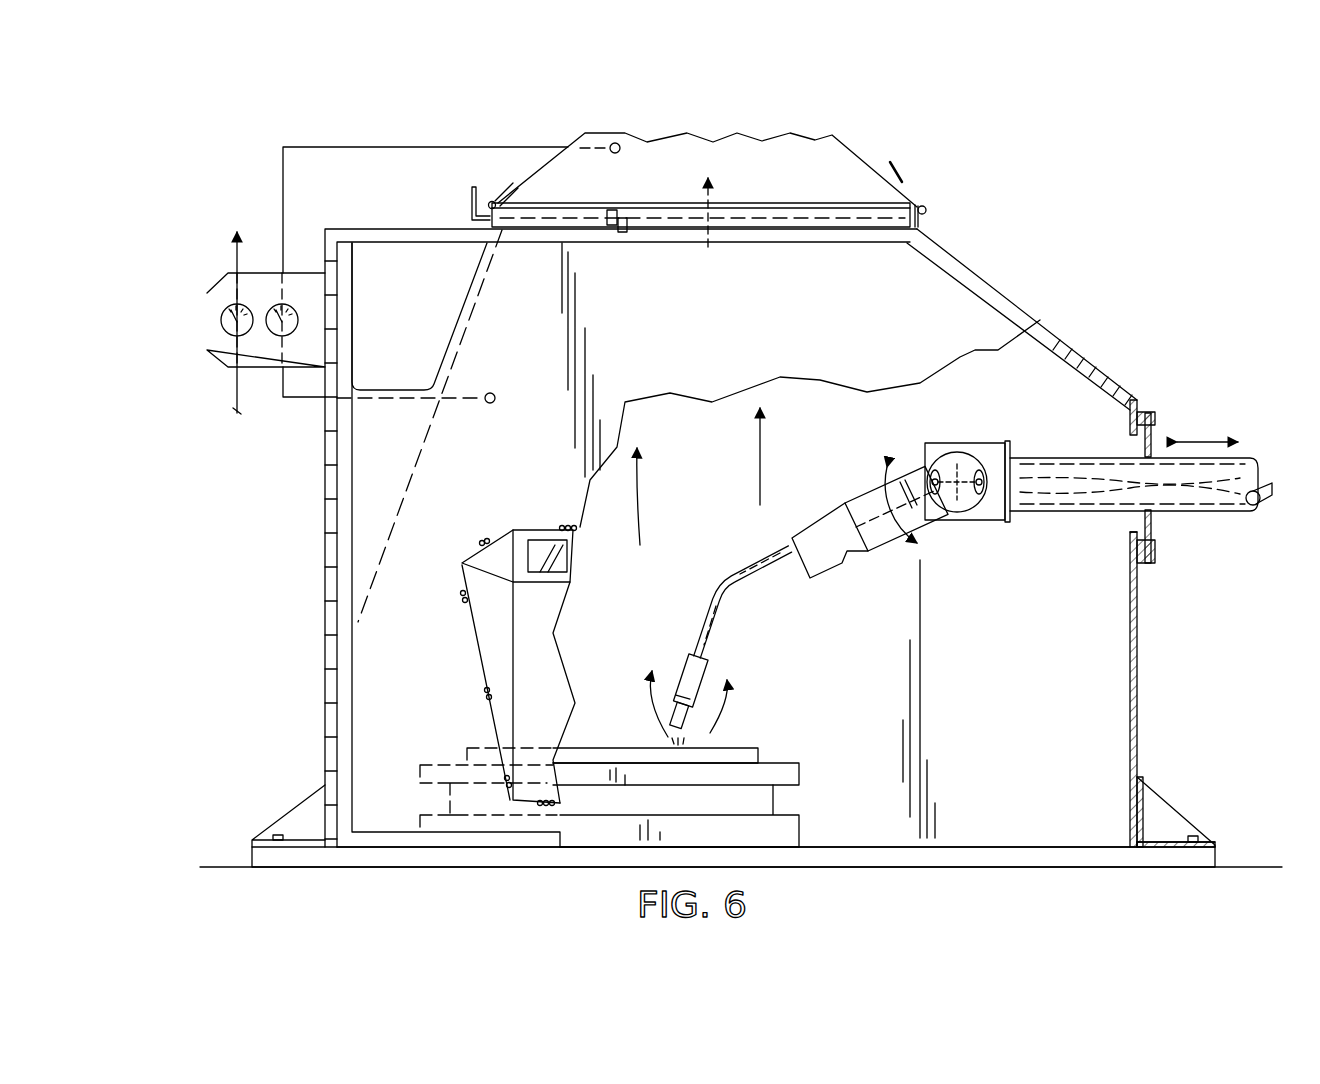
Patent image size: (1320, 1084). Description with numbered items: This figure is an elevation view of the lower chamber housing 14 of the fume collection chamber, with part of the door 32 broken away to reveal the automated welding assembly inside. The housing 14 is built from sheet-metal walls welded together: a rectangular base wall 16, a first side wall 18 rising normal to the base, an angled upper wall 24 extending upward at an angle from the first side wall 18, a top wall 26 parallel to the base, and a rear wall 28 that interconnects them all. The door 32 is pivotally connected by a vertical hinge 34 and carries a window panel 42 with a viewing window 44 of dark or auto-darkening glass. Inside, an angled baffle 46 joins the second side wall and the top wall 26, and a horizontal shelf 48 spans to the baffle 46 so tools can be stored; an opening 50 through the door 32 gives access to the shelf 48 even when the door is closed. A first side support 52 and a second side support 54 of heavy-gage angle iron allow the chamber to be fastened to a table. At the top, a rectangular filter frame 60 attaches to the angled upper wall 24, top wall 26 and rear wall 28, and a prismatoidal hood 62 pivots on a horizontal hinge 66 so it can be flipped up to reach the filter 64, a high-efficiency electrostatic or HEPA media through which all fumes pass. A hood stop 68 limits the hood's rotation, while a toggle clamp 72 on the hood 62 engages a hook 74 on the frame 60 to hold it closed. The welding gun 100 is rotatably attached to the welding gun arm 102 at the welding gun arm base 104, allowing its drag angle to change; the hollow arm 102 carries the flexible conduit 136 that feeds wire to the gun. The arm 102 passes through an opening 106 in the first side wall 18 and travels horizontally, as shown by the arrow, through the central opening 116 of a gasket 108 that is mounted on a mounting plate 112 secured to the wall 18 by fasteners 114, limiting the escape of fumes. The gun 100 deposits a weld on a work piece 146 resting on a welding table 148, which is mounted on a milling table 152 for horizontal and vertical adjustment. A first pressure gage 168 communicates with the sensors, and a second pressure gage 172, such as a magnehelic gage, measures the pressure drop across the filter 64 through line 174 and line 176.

The chamber housing 14 is at (1058, 305).
The base wall 16 is at (990, 847).
The first side wall 18 is at (1137, 670).
The angled upper wall 24 is at (1095, 360).
The top wall 26 is at (437, 229).
The rear wall 28 is at (975, 689).
The door 32 is at (946, 298).
The vertical hinge 34 is at (325, 580).
The window panel 42 is at (522, 637).
The viewing window 44 is at (547, 543).
The angled baffle 46 is at (413, 480).
The horizontal shelf 48 is at (395, 390).
The opening 50 is at (385, 265).
The first side support 52 is at (1165, 817).
The second side support 54 is at (303, 817).
The filter frame 60 is at (843, 205).
The hood 62 is at (845, 150).
The filter 64 is at (818, 225).
The horizontal hinge 66 is at (493, 201).
The hood stop 68 is at (470, 192).
The toggle clamp 72 is at (903, 180).
The hook 74 is at (927, 208).
The welding gun 100 is at (697, 622).
The welding gun arm 102 is at (1240, 457).
The welding gun arm base 104 is at (933, 447).
The opening 106 is at (1133, 527).
The gasket 108 is at (1160, 430).
The mounting plate 112 is at (1152, 557).
The fasteners 114 is at (1153, 440).
The central opening 116 is at (1153, 498).
The flexible conduit 136 is at (1268, 490).
The work piece 146 is at (747, 747).
The welding table 148 is at (792, 777).
The milling table 152 is at (788, 825).
The first pressure gage 168 is at (222, 330).
The second pressure gage 172 is at (275, 338).
The line 174 is at (283, 180).
The line 176 is at (303, 400).